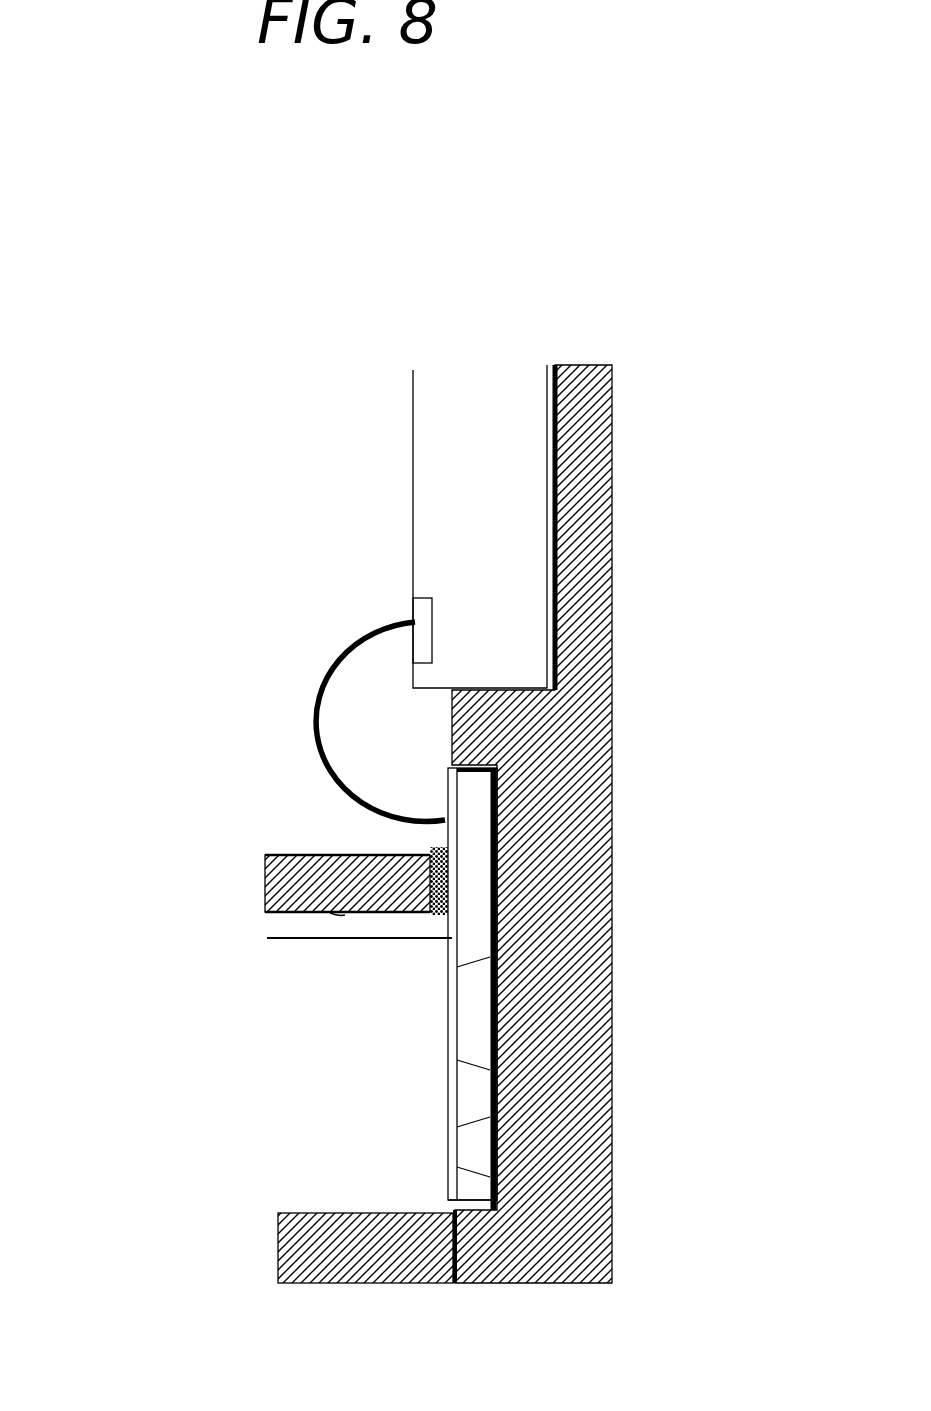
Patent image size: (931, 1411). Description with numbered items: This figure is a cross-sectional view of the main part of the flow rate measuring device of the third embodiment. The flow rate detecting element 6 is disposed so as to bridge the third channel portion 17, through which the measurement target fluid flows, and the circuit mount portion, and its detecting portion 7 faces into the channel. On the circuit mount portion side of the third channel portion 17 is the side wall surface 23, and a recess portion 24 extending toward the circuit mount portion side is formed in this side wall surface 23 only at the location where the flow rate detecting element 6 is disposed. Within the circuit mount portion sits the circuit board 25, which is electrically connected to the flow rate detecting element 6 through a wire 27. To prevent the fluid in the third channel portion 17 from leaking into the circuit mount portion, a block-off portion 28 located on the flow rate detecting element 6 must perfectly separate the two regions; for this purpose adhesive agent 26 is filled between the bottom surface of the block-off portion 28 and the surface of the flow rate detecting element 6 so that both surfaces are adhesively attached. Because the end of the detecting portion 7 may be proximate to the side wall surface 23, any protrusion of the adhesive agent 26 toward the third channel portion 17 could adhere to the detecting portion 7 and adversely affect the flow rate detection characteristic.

The flow rate detecting element 6 is at (480, 822).
The detecting portion 7 is at (472, 1013).
The third channel portion 17 is at (357, 1155).
The side wall surface 23 is at (360, 938).
The recess portion 24 is at (337, 913).
The circuit board 25 is at (480, 464).
The adhesive agent 26 is at (448, 885).
The wire 27 is at (325, 697).
The block-off portion 28 is at (330, 888).